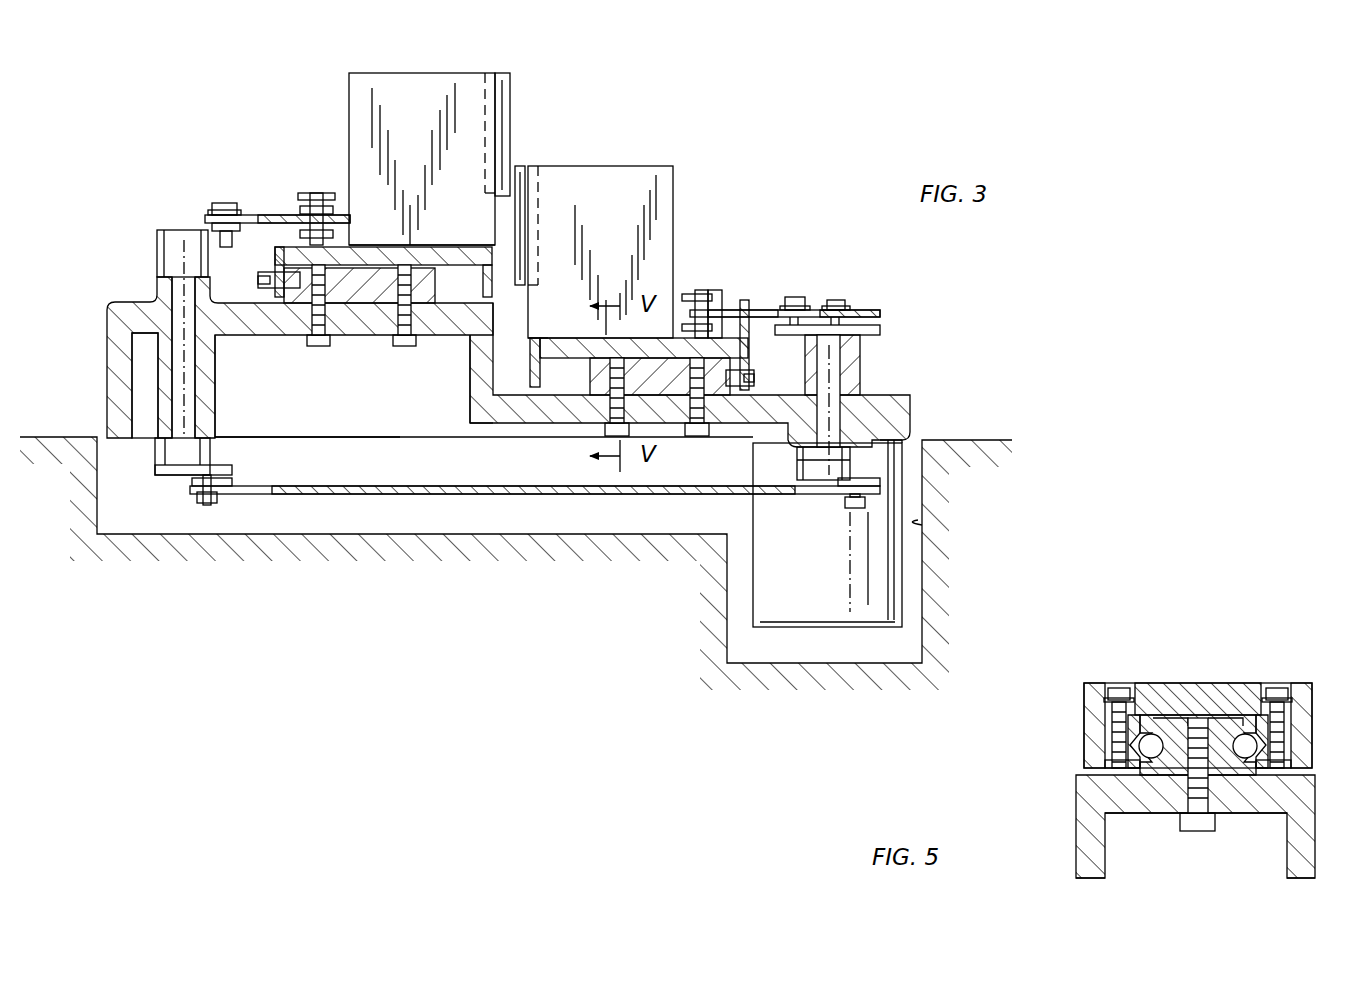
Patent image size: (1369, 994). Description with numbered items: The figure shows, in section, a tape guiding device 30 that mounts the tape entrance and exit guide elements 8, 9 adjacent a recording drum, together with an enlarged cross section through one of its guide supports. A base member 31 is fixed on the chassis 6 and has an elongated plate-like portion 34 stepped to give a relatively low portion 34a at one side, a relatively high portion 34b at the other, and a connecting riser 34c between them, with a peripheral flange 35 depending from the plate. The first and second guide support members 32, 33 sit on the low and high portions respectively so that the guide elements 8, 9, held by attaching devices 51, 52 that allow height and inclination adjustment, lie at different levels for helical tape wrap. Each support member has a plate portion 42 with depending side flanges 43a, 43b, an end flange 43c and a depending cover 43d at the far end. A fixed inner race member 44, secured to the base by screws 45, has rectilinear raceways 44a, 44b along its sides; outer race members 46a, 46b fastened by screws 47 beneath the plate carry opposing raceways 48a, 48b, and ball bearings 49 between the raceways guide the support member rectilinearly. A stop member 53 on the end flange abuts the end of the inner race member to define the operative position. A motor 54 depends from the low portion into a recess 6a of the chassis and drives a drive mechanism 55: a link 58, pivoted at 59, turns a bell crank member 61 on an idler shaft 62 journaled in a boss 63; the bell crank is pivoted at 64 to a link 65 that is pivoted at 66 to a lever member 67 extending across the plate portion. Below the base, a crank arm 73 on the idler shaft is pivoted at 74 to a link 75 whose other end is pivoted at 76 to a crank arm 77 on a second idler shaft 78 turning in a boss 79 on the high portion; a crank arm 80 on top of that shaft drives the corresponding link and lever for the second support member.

In FIG. 3, the chassis 6 is at (972, 448).
In FIG. 3, the recess 6a is at (922, 525).
In FIG. 3, the tape entrance guide element 8 is at (520, 170).
In FIG. 3, the tape exit guide element 9 is at (508, 73).
In FIG. 3, the tape guiding device 30 is at (872, 282).
In FIG. 3, the base member 31 is at (915, 400).
In FIG. 5, the base member 31 is at (1068, 812).
In FIG. 3, the first guide support member 32 is at (549, 336).
In FIG. 5, the first guide support member 32 is at (1311, 680).
In FIG. 3, the second guide support member 33 is at (402, 242).
In FIG. 3, the plate-like portion 34 is at (470, 428).
In FIG. 5, the plate-like portion 34 is at (1228, 815).
In FIG. 3, the relatively low portion 34a is at (612, 418).
In FIG. 3, the relatively high portion 34b is at (225, 355).
In FIG. 3, the connecting riser 34c is at (472, 372).
In FIG. 3, the peripheral flange 35 is at (302, 433).
In FIG. 5, the peripheral flange 35 is at (1080, 858).
In FIG. 3, the plate portion 42 is at (360, 258).
In FIG. 5, the plate portion 42 is at (1192, 683).
In FIG. 5, the side flange 43a is at (1084, 732).
In FIG. 5, the side flange 43b is at (1312, 742).
In FIG. 3, the end flange 43c is at (278, 272).
In FIG. 3, the depending cover 43d is at (525, 283).
In FIG. 3, the inner race member 44 is at (344, 300).
In FIG. 5, the inner race member 44 is at (1175, 770).
In FIG. 5, the rectilinear raceway 44a is at (1170, 735).
In FIG. 5, the rectilinear raceway 44b is at (1212, 728).
In FIG. 3, the screws 45 is at (318, 346).
In FIG. 5, the screws 45 is at (1205, 740).
In FIG. 5, the outer race member 46a is at (1100, 718).
In FIG. 5, the outer race member 46b is at (1260, 720).
In FIG. 5, the screws 47 is at (1122, 688).
In FIG. 5, the rectilinear raceway 48a is at (1100, 762).
In FIG. 5, the rectilinear raceway 48b is at (1300, 763).
In FIG. 5, the ball bearings 49 is at (1150, 757).
In FIG. 3, the attaching device 51 is at (673, 188).
In FIG. 3, the attaching device 52 is at (349, 106).
In FIG. 3, the stop member 53 is at (280, 292).
In FIG. 3, the motor 54 is at (836, 628).
In FIG. 3, the drive mechanism 55 is at (355, 496).
In FIG. 3, the link 58 is at (882, 313).
In FIG. 3, the pivotal connection 59 is at (836, 300).
In FIG. 3, the bell crank member 61 is at (882, 330).
In FIG. 3, the idler shaft 62 is at (832, 392).
In FIG. 3, the boss 63 is at (852, 378).
In FIG. 3, the pivotal connection 64 is at (218, 205).
In FIG. 3, the link 65 is at (250, 215).
In FIG. 3, the pivotal connection 66 is at (312, 193).
In FIG. 3, the lever member 67 is at (325, 218).
In FIG. 3, the crank arm 73 is at (862, 462).
In FIG. 3, the pivotal connection 74 is at (848, 500).
In FIG. 3, the link 75 is at (452, 494).
In FIG. 3, the pivotal connection 76 is at (212, 503).
In FIG. 3, the crank arm 77 is at (172, 475).
In FIG. 3, the idler shaft 78 is at (180, 392).
In FIG. 3, the boss 79 is at (160, 343).
In FIG. 3, the crank arm 80 is at (318, 193).